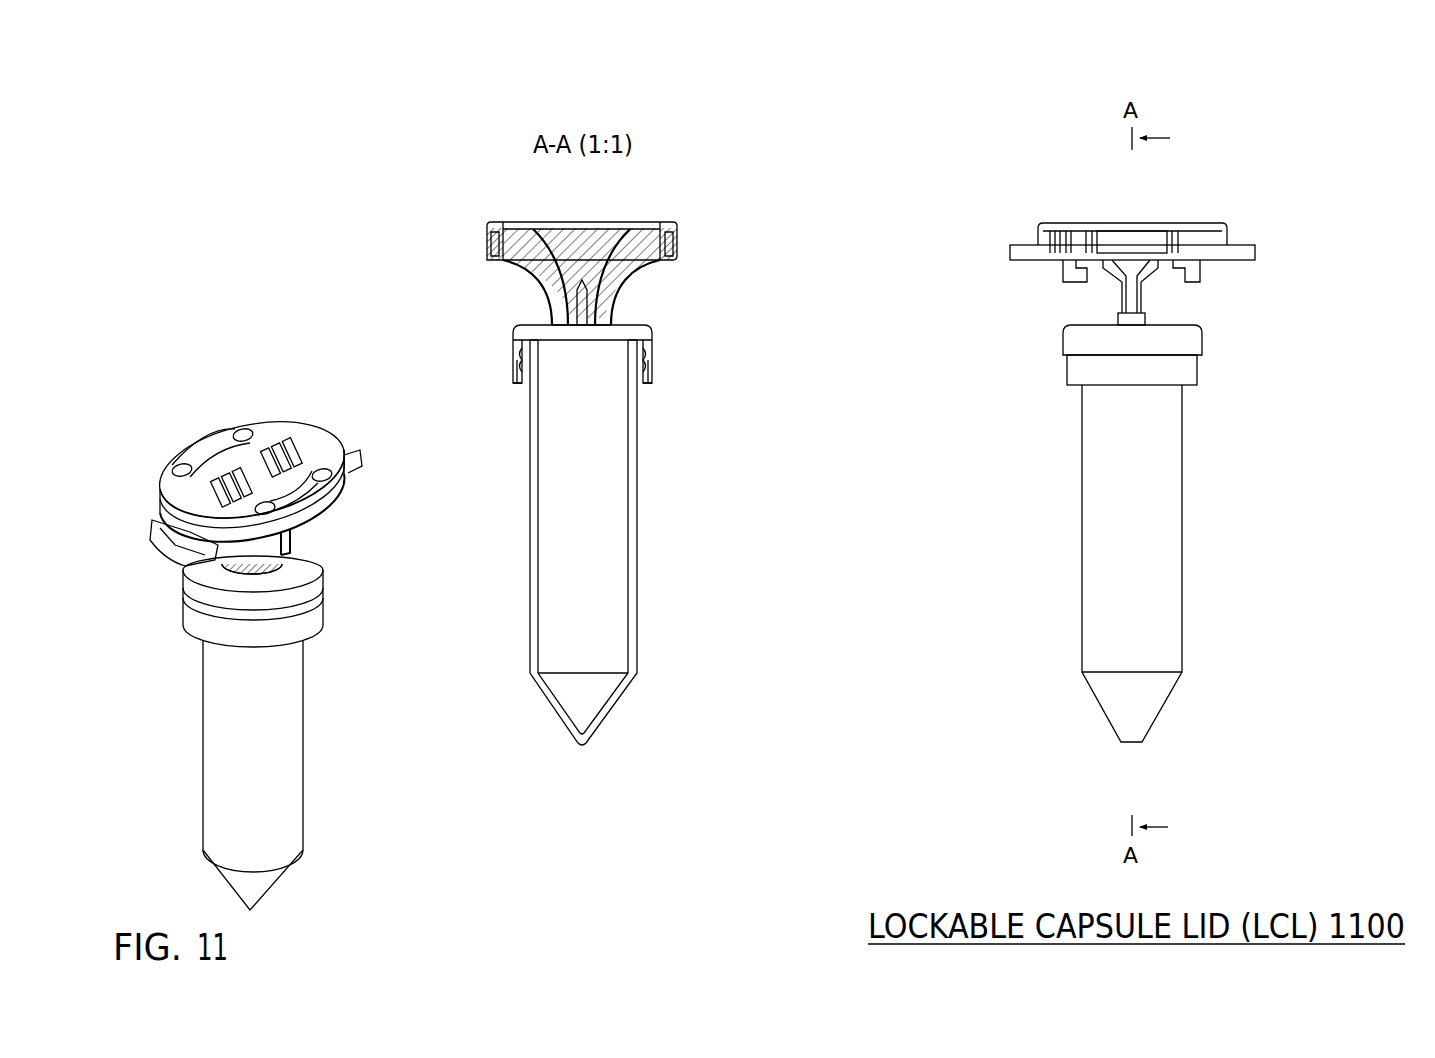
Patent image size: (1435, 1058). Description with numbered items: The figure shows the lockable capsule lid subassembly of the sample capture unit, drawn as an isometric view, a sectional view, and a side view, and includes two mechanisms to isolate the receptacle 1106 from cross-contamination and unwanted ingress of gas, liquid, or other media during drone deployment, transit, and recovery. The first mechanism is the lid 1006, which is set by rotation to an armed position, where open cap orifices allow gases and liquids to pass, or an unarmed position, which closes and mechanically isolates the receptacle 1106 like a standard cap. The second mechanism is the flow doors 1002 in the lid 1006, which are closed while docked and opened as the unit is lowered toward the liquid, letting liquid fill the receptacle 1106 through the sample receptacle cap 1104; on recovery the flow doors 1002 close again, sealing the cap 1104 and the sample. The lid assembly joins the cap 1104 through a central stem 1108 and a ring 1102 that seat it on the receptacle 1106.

The flow doors 1002 is at (482, 234).
The lid 1006 is at (481, 253).
The funnel stem 1108 is at (547, 318).
The cap ring 1102 is at (655, 320).
The sample receptacle cap 1104 is at (508, 362).
The receptacle 1106 is at (640, 476).